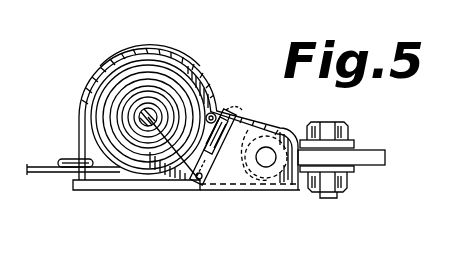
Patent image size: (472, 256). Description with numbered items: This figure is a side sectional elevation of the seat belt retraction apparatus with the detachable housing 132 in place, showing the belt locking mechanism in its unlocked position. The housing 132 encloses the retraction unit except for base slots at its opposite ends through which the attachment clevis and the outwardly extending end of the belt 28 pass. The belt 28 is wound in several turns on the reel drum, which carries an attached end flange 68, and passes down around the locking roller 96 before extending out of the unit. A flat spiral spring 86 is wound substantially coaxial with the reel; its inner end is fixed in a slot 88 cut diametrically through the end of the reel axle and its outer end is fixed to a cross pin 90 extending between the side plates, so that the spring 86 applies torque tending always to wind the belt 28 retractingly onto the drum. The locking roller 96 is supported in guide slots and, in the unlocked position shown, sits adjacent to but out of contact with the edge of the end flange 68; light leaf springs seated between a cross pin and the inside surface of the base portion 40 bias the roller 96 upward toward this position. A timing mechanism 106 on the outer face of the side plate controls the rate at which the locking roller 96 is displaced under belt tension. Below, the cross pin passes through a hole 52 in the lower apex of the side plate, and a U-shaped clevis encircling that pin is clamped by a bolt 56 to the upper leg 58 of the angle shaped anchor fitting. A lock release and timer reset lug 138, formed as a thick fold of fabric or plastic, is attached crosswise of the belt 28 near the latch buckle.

The belt 28 is at (29, 174).
The base portion 40 is at (167, 192).
The hole 52 is at (268, 170).
The bolt 56 is at (322, 124).
The upper leg 58 is at (366, 150).
The end flange 68 is at (183, 62).
The flat spiral spring 86 is at (100, 117).
The slot 88 is at (146, 116).
The cross pin 90 is at (222, 108).
The locking roller 96 is at (233, 110).
The timing mechanism 106 is at (218, 172).
The housing 132 is at (138, 50).
The lock release and timer reset lug 138 is at (68, 160).